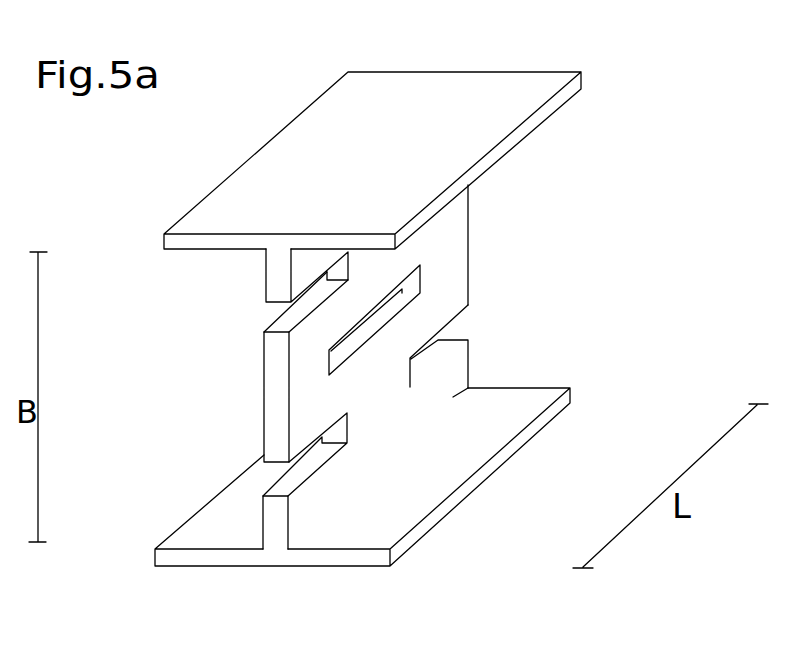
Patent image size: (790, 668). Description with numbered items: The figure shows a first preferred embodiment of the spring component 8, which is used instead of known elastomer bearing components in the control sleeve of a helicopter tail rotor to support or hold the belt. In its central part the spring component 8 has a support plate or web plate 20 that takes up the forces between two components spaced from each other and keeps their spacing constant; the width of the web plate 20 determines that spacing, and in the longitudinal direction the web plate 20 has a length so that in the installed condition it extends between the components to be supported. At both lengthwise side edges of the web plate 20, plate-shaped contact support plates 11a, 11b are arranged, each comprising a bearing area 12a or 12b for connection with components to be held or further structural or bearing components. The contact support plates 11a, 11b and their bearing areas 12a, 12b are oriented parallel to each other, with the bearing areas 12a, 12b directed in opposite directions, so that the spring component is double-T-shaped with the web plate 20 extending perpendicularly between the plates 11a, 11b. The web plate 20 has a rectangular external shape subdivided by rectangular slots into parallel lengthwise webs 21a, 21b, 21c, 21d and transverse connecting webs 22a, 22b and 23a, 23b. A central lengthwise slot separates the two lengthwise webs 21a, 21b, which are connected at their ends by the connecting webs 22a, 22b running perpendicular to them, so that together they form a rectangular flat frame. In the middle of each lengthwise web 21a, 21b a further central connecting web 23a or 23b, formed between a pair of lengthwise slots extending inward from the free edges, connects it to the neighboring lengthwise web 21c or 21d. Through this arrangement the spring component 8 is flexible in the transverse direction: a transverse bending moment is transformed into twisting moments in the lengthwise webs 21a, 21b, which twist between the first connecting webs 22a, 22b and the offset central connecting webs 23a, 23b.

The spring component 8 is at (640, 181).
The contact support plate 11a is at (272, 182).
The contact support plate 11b is at (448, 505).
The bearing area 12a is at (421, 108).
The bearing area 12b is at (359, 577).
The web plate 20 is at (236, 402).
The lengthwise web 21a is at (333, 325).
The lengthwise web 21b is at (338, 399).
The lengthwise web 21c is at (300, 272).
The lengthwise web 21d is at (325, 493).
The connecting web 22a is at (303, 367).
The connecting web 22b is at (456, 269).
The central connecting web 23a is at (385, 253).
The central connecting web 23b is at (398, 398).